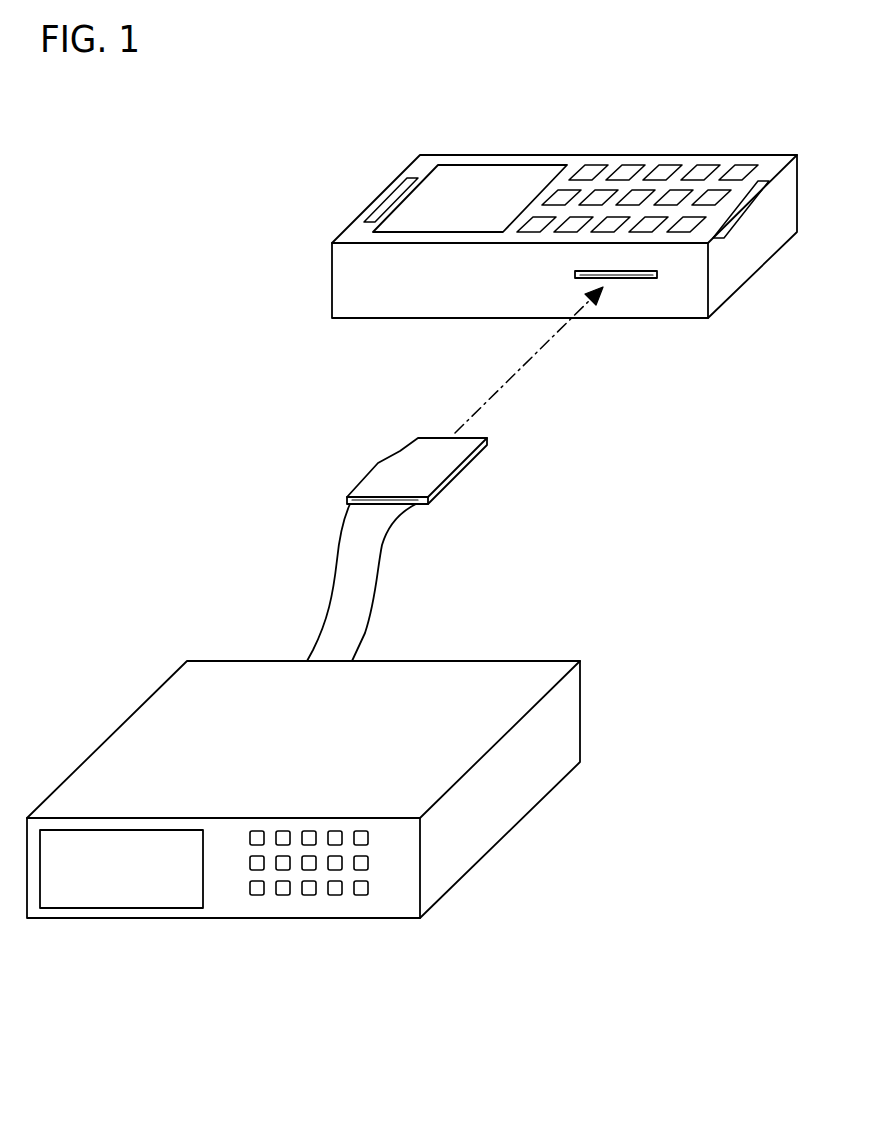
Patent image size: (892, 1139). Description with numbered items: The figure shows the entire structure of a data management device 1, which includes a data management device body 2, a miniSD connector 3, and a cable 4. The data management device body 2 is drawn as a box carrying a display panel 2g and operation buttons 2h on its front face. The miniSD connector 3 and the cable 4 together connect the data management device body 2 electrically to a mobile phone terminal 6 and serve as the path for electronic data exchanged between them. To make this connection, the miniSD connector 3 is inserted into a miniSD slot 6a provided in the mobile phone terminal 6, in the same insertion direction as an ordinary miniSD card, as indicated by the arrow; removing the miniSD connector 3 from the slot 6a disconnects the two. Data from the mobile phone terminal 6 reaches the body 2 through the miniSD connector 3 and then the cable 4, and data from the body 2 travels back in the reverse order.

The data management device 1 is at (622, 404).
The data management device body 2 is at (580, 718).
The display panel 2g is at (83, 893).
The operation button 2h is at (295, 902).
The miniSD connector 3 is at (378, 463).
The cable 4 is at (378, 570).
The mobile phone terminal 6 is at (332, 283).
The miniSD slot 6a is at (644, 282).